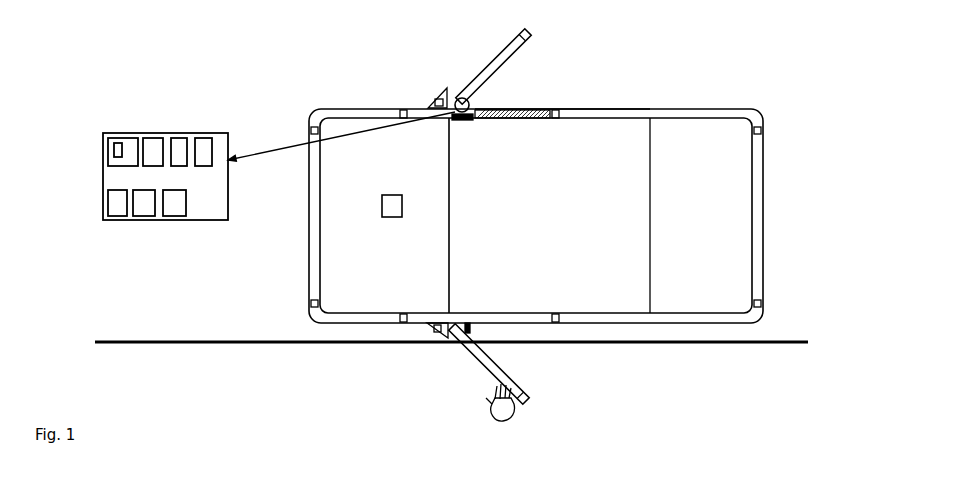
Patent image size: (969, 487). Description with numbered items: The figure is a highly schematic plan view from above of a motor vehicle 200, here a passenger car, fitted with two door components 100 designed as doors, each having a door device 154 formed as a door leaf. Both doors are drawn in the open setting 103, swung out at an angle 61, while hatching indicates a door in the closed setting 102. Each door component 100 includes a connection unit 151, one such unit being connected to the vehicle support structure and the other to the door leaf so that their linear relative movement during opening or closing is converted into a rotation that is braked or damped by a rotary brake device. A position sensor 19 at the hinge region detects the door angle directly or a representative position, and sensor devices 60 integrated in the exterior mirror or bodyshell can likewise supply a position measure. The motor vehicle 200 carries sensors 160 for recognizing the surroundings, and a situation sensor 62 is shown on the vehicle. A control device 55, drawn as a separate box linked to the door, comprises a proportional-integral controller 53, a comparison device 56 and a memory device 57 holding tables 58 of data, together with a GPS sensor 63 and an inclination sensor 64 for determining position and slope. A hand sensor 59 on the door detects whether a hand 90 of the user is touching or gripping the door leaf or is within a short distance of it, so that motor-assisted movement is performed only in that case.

The position sensor 19 is at (455, 100).
The proportional-integral controller 53 is at (140, 208).
The control device 55 is at (142, 169).
The comparison device 56 is at (115, 202).
The memory device 57 is at (113, 160).
The tables 58 is at (116, 150).
The hand sensor 59 is at (555, 123).
The sensor devices 60 is at (433, 101).
The angle 61 is at (535, 110).
The situation sensor 62 is at (388, 207).
The GPS sensor 63 is at (150, 148).
The inclination sensor 64 is at (181, 148).
The hand 90 is at (513, 418).
The door component 100 is at (476, 130).
The closed setting 102 is at (542, 116).
The open setting 103 is at (617, 58).
The connection unit 151 is at (458, 320).
The door device 154 is at (485, 67).
The sensors 160 is at (403, 322).
The motor vehicle 200 is at (288, 95).